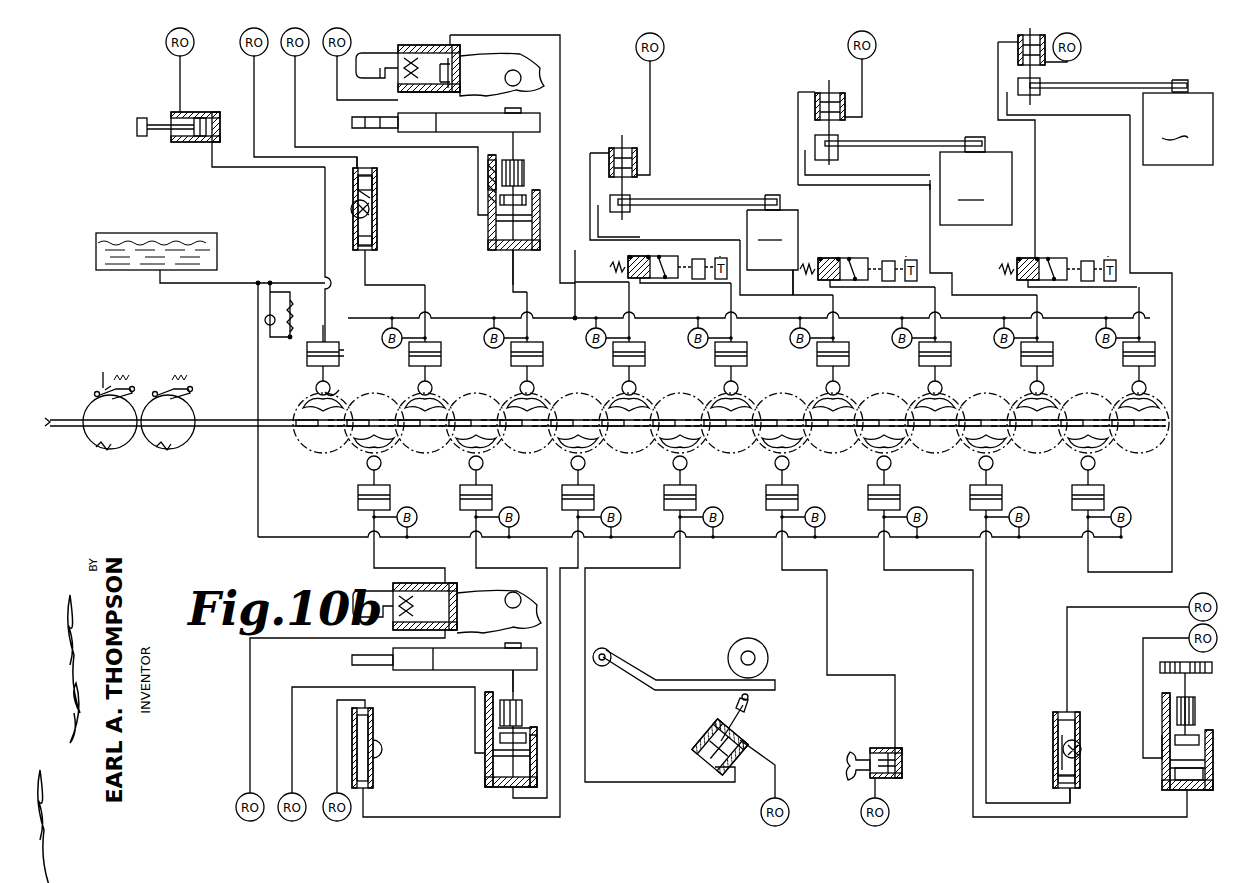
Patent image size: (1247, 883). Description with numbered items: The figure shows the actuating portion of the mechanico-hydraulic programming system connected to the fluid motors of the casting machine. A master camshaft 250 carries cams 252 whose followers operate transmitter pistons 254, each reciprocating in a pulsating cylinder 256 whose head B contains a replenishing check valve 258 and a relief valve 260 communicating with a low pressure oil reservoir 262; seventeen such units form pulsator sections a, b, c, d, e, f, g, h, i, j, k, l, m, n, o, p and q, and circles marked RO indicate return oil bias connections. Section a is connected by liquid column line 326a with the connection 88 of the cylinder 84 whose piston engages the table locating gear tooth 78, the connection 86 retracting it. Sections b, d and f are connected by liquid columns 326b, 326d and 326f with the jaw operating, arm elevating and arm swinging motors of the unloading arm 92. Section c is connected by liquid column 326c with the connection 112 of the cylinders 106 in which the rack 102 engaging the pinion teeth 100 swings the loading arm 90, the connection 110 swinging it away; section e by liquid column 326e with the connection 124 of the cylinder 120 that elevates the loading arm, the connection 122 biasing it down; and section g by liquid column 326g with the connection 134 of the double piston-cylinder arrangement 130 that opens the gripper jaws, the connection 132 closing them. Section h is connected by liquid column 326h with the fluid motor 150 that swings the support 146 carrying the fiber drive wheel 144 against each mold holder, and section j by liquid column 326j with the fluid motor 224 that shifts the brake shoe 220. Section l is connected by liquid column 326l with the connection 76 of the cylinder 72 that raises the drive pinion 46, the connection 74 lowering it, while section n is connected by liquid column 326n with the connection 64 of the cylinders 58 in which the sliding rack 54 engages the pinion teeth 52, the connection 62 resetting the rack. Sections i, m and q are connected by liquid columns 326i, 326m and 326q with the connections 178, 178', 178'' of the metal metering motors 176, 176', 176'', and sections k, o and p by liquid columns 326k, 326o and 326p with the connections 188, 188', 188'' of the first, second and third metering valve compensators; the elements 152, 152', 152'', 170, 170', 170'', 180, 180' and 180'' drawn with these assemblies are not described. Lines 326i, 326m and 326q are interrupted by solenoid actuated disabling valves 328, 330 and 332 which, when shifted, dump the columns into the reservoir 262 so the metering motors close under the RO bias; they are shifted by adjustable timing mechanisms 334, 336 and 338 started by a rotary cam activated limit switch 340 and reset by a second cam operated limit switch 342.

The pinion 46 is at (1160, 668).
The pinion teeth 52 is at (1082, 754).
The sliding rack 54 is at (1062, 750).
The aligned cylinders 58 is at (1062, 720).
The connection 62 is at (1060, 713).
The connection 64 is at (1073, 792).
The cylinder 72 is at (1173, 774).
The connection 74 is at (1162, 758).
The connection 76 is at (1170, 793).
The gear tooth 78 is at (137, 127).
The cylinder 84 is at (202, 118).
The connection 86 is at (175, 112).
The connection 88 is at (214, 142).
The loading arm 90 is at (519, 122).
The unloading arm 92 is at (488, 640).
The pinion teeth 100 is at (513, 170).
The rack 102 is at (490, 173).
The aligned cylinders 106 is at (375, 180).
The connection 110 is at (376, 168).
The connection 112 is at (378, 251).
The cylinder 120 is at (495, 239).
The connection 122 is at (487, 222).
The connection 124 is at (512, 254).
The double piston-cylinder arrangement 130 is at (462, 60).
The connection 132 is at (444, 94).
The connection 134 is at (448, 43).
The fiber drive wheel 144 is at (756, 658).
The support 146 is at (670, 683).
The fluid motor 150 is at (712, 735).
The control unit 152 is at (772, 252).
The control unit 152' is at (976, 188).
The control unit 152'' is at (1178, 129).
The rack bar 170 is at (699, 190).
The rack bar 170' is at (905, 130).
The rack bar 170'' is at (1109, 71).
The metal metering motor 176 is at (629, 119).
The metal metering motor 176' is at (836, 89).
The metal metering motor 176'' is at (1006, 51).
The connection 178 is at (655, 182).
The connection 178' is at (786, 83).
The connection 178'' is at (979, 38).
The valve stem 180 is at (656, 177).
The valve stem 180' is at (867, 122).
The valve stem 180'' is at (1073, 66).
The connection 188 is at (627, 217).
The connection 188' is at (843, 145).
The connection 188'' is at (994, 82).
The brake shoe 220 is at (846, 750).
The fluid motor 224 is at (895, 756).
The master camshaft 250 is at (62, 424).
The cams 252 is at (339, 379).
The transmitter pistons 254 is at (340, 342).
The cylinder 256 is at (329, 343).
The inlet replenishing check valve 258 is at (266, 316).
The high pressure relief valve 260 is at (292, 307).
The low pressure oil reservoir 262 is at (158, 242).
The liquid column line 326a is at (324, 204).
The liquid column line 326b is at (373, 554).
The liquid column line 326c is at (424, 287).
The liquid column line 326d is at (475, 554).
The liquid column line 326e is at (526, 299).
The liquid column line 326f is at (426, 817).
The liquid column line 326g is at (562, 75).
The liquid column line 326h is at (585, 608).
The liquid column line 326i is at (698, 290).
The liquid column line 326j is at (827, 622).
The liquid column line 326k is at (783, 286).
The liquid column line 326l is at (973, 664).
The liquid column line 326m is at (804, 154).
The liquid column line 326n is at (989, 645).
The liquid column line 326o is at (928, 186).
The liquid column line 326p is at (1132, 193).
The liquid column line 326q is at (1120, 288).
The solenoid actuated valve 328 is at (672, 256).
The solenoid actuated valve 330 is at (856, 256).
The solenoid actuated valve 332 is at (1062, 256).
The timing mechanism 334 is at (720, 256).
The timing mechanism 336 is at (906, 256).
The timing mechanism 338 is at (1108, 256).
The rotary cam activated limit switch 340 is at (140, 371).
The second cam operated limit switch 342 is at (193, 382).
The pulsator section a is at (323, 416).
The pulsator section b is at (374, 451).
The pulsator section c is at (425, 397).
The pulsator section d is at (476, 451).
The pulsator section e is at (527, 397).
The pulsator section f is at (578, 451).
The pulsator section g is at (629, 397).
The pulsator section h is at (680, 451).
The pulsator section i is at (731, 397).
The pulsator section j is at (782, 451).
The pulsator section k is at (833, 397).
The pulsator section l is at (884, 451).
The pulsator section m is at (935, 397).
The pulsator section n is at (986, 451).
The pulsator section o is at (1037, 397).
The pulsator section p is at (1088, 451).
The pulsator section q is at (1139, 397).
The head B is at (290, 348).